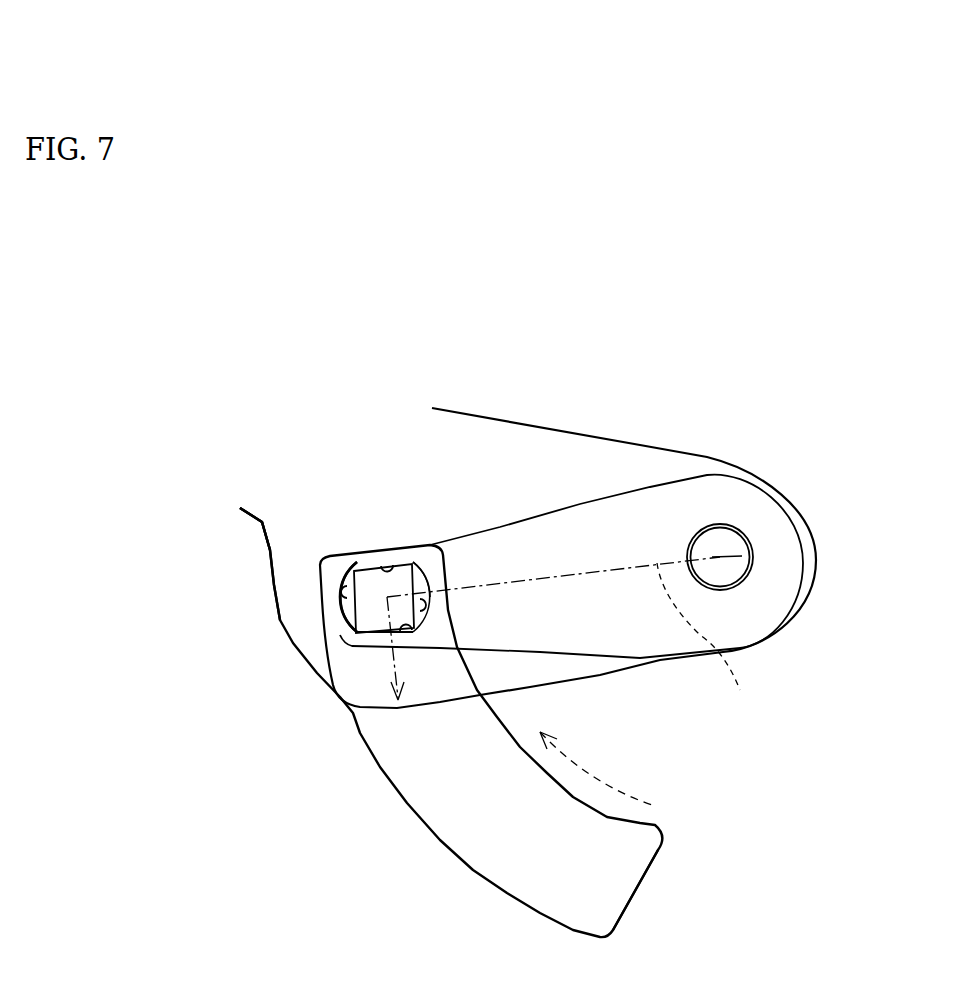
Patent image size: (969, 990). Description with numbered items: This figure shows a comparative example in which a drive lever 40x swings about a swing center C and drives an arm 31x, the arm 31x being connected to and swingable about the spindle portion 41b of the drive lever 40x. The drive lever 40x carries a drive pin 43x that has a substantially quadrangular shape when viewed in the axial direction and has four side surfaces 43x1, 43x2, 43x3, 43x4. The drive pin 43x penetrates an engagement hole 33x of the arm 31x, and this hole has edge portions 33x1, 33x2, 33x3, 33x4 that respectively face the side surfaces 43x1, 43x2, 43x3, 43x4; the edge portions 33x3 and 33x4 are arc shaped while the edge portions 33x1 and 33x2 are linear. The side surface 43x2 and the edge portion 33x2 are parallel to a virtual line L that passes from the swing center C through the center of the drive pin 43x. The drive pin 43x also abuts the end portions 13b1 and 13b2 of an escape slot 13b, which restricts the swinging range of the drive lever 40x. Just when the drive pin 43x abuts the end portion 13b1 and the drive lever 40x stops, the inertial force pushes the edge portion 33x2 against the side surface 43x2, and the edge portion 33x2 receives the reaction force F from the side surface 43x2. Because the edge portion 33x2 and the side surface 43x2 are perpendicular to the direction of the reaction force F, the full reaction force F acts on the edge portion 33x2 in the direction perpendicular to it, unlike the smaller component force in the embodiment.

The escape slot 13b is at (463, 860).
The end portion 13b1 is at (322, 566).
The end portion 13b2 is at (624, 906).
The arm 31x is at (252, 536).
The engagement hole 33x is at (441, 562).
The edge portion 33x1 is at (388, 566).
The edge portion 33x2 is at (408, 632).
The edge portion 33x3 is at (426, 607).
The edge portion 33x4 is at (345, 596).
The drive lever 40x is at (658, 472).
The spindle portion 41b is at (742, 556).
The drive pin 43x is at (355, 627).
The side surface 43x1 is at (356, 568).
The side surface 43x2 is at (378, 640).
The side surface 43x3 is at (430, 543).
The side surface 43x4 is at (345, 614).
The swing center C is at (721, 558).
The virtual line L is at (567, 639).
The reaction force F is at (404, 652).